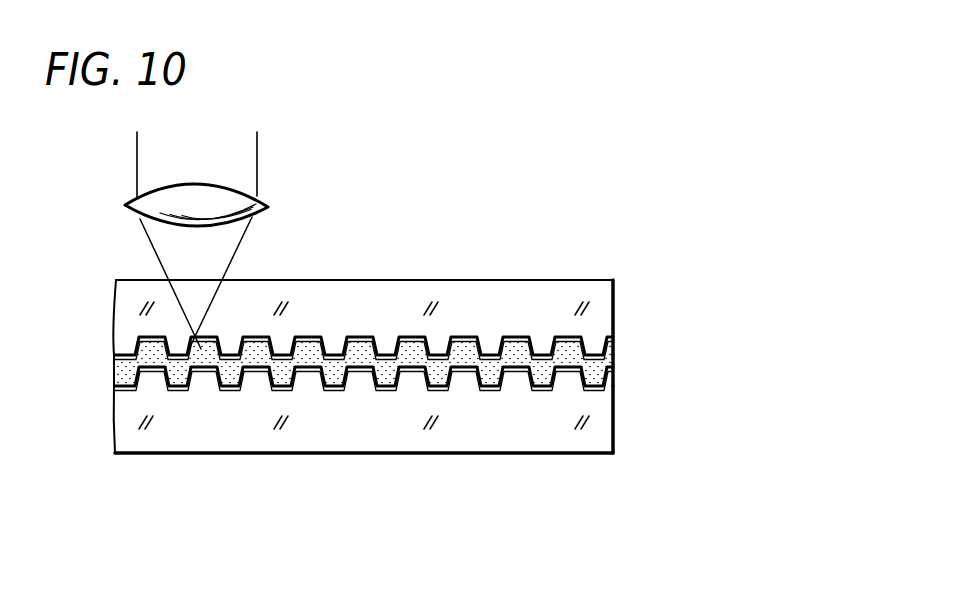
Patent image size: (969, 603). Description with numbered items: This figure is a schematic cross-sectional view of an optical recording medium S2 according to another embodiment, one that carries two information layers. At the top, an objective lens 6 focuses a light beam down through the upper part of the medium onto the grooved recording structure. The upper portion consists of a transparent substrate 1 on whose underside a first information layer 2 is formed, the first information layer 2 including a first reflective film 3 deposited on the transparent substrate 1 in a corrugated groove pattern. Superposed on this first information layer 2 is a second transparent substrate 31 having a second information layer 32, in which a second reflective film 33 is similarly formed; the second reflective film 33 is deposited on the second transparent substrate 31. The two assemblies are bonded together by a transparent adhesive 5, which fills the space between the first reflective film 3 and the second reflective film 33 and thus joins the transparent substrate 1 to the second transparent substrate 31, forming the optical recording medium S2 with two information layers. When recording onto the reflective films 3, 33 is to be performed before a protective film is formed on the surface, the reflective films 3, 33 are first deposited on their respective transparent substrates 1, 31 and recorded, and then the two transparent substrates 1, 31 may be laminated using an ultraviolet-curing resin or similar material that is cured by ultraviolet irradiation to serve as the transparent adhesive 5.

The objective lens 6 is at (258, 190).
The reflective film 3 is at (263, 337).
The first information layer 2 is at (367, 338).
The transparent substrate 1 is at (533, 280).
The optical recording medium S2 is at (463, 356).
The transparent adhesive 5 is at (607, 366).
The second reflective film 33 is at (281, 390).
The second information layer 32 is at (475, 386).
The second transparent substrate 31 is at (562, 433).